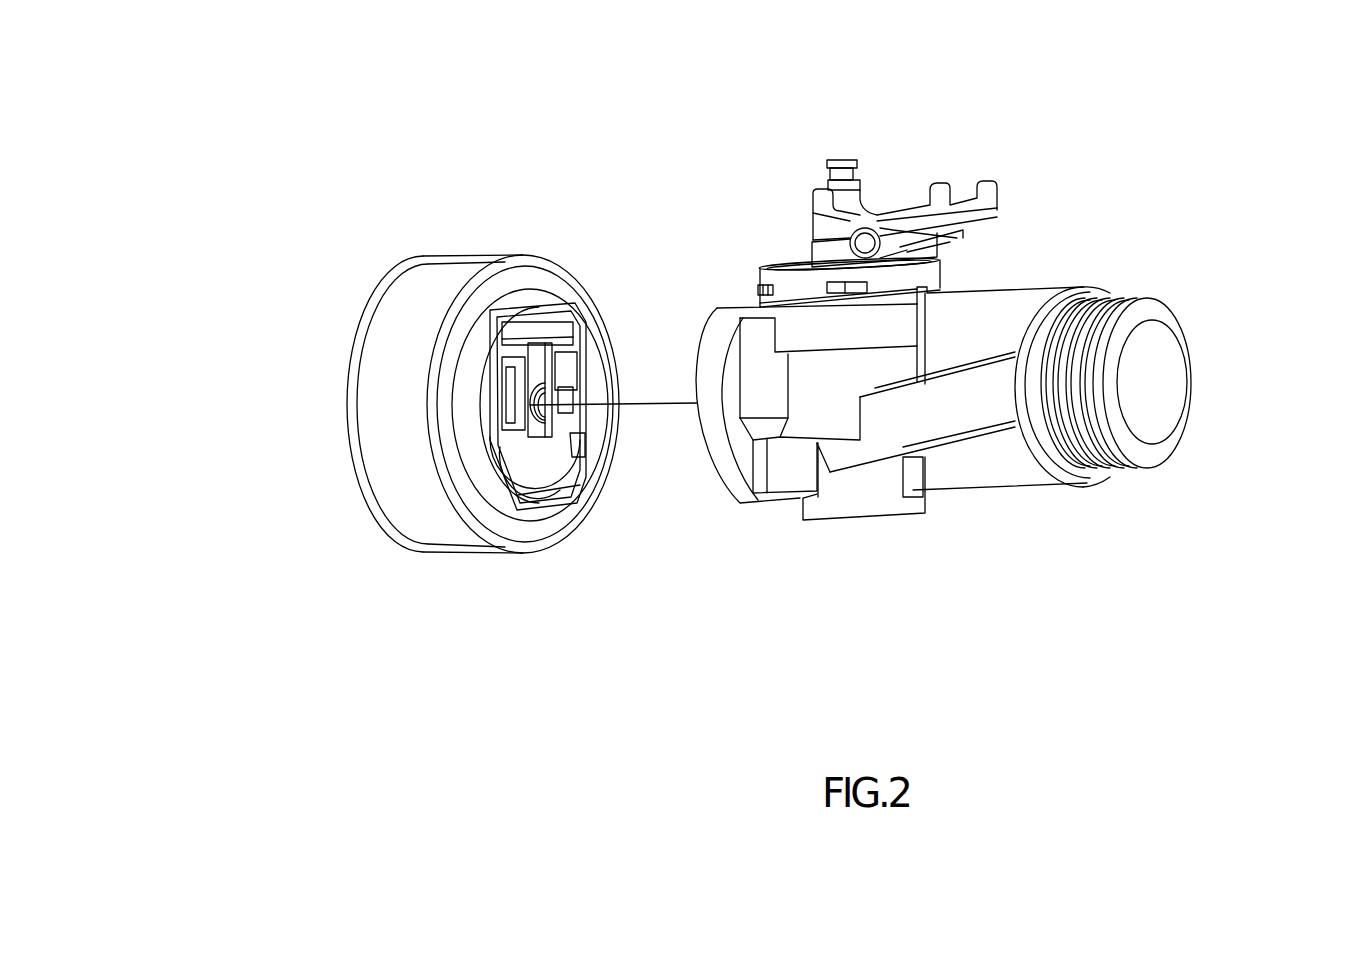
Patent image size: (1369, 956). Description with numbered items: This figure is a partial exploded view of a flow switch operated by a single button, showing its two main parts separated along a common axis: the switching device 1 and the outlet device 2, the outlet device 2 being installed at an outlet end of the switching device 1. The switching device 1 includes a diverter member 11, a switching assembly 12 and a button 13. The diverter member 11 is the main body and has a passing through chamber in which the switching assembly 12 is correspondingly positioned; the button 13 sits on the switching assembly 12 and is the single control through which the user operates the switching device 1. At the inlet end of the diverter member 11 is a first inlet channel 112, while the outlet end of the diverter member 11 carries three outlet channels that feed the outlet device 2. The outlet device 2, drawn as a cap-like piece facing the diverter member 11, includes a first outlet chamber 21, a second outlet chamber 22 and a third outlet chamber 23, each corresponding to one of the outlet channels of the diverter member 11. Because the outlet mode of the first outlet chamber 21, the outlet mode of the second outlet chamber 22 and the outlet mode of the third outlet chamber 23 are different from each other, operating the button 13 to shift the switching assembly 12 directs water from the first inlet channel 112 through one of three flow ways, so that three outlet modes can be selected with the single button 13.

The switching device 1 is at (933, 532).
The diverter member 11 is at (987, 325).
The first inlet channel 112 is at (1157, 392).
The switching assembly 12 is at (830, 258).
The button 13 is at (908, 220).
The outlet device 2 is at (190, 280).
The first outlet chamber 21 is at (525, 340).
The second outlet chamber 22 is at (512, 398).
The third outlet chamber 23 is at (527, 463).